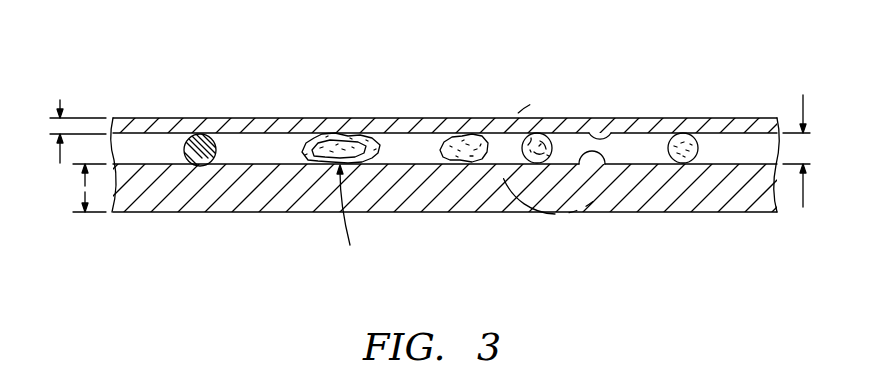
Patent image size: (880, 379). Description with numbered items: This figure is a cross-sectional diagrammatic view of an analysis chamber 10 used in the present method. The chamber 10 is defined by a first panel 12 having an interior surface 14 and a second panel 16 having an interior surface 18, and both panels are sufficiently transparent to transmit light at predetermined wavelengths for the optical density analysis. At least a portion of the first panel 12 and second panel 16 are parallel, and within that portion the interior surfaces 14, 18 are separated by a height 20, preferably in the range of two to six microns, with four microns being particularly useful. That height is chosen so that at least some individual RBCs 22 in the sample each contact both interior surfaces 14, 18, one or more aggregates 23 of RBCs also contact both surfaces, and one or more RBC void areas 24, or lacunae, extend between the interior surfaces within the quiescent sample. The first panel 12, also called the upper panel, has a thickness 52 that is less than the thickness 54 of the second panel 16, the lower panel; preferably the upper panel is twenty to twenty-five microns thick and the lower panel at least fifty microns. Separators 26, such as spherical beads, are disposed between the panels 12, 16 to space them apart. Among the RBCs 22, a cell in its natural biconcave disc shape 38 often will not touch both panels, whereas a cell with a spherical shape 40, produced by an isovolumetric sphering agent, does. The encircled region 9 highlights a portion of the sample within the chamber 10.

The enlarged region 9 is at (590, 109).
The analysis chamber 10 is at (398, 147).
The first panel 12 is at (438, 117).
The interior surface 14 is at (608, 131).
The second panel 16 is at (257, 213).
The interior surface 18 is at (604, 164).
The height 20 is at (803, 95).
The individual RBCs 22 is at (318, 133).
The aggregates of RBCs 23 is at (354, 218).
The RBC void areas 24 is at (636, 143).
The separators 26 is at (188, 141).
The biconcave disc shaped RBC 38 is at (487, 155).
The spherically shaped RBC 40 is at (697, 136).
The thickness 52 is at (60, 100).
The thickness 54 is at (85, 193).